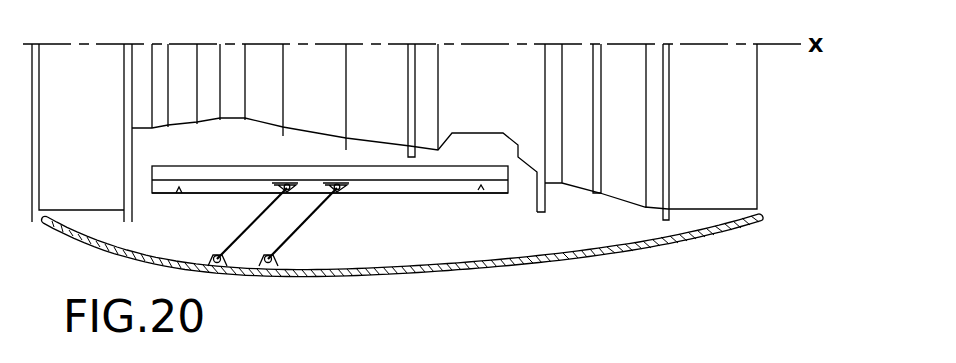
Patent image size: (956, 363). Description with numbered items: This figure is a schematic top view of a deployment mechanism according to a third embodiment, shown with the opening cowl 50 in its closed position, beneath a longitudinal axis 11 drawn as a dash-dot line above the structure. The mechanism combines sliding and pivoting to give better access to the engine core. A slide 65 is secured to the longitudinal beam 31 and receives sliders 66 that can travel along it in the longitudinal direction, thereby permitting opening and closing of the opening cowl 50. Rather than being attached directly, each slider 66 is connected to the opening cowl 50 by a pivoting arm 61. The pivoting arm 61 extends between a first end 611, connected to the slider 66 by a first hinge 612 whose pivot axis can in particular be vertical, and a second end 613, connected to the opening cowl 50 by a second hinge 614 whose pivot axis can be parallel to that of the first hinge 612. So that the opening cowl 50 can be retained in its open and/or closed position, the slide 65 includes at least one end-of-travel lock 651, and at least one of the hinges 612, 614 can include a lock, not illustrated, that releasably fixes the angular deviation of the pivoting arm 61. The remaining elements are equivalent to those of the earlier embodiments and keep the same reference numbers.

The longitudinal axis 11 is at (483, 63).
The longitudinal beam 31 is at (208, 194).
The opening cowl 50 is at (666, 243).
The pivoting arm 61 is at (300, 224).
The first end 611 is at (333, 191).
The first hinge 612 is at (343, 188).
The second end 613 is at (279, 257).
The second hinge 614 is at (268, 268).
The slide 65 is at (434, 183).
The end-of-travel lock 651 is at (180, 191).
The slider 66 is at (343, 190).